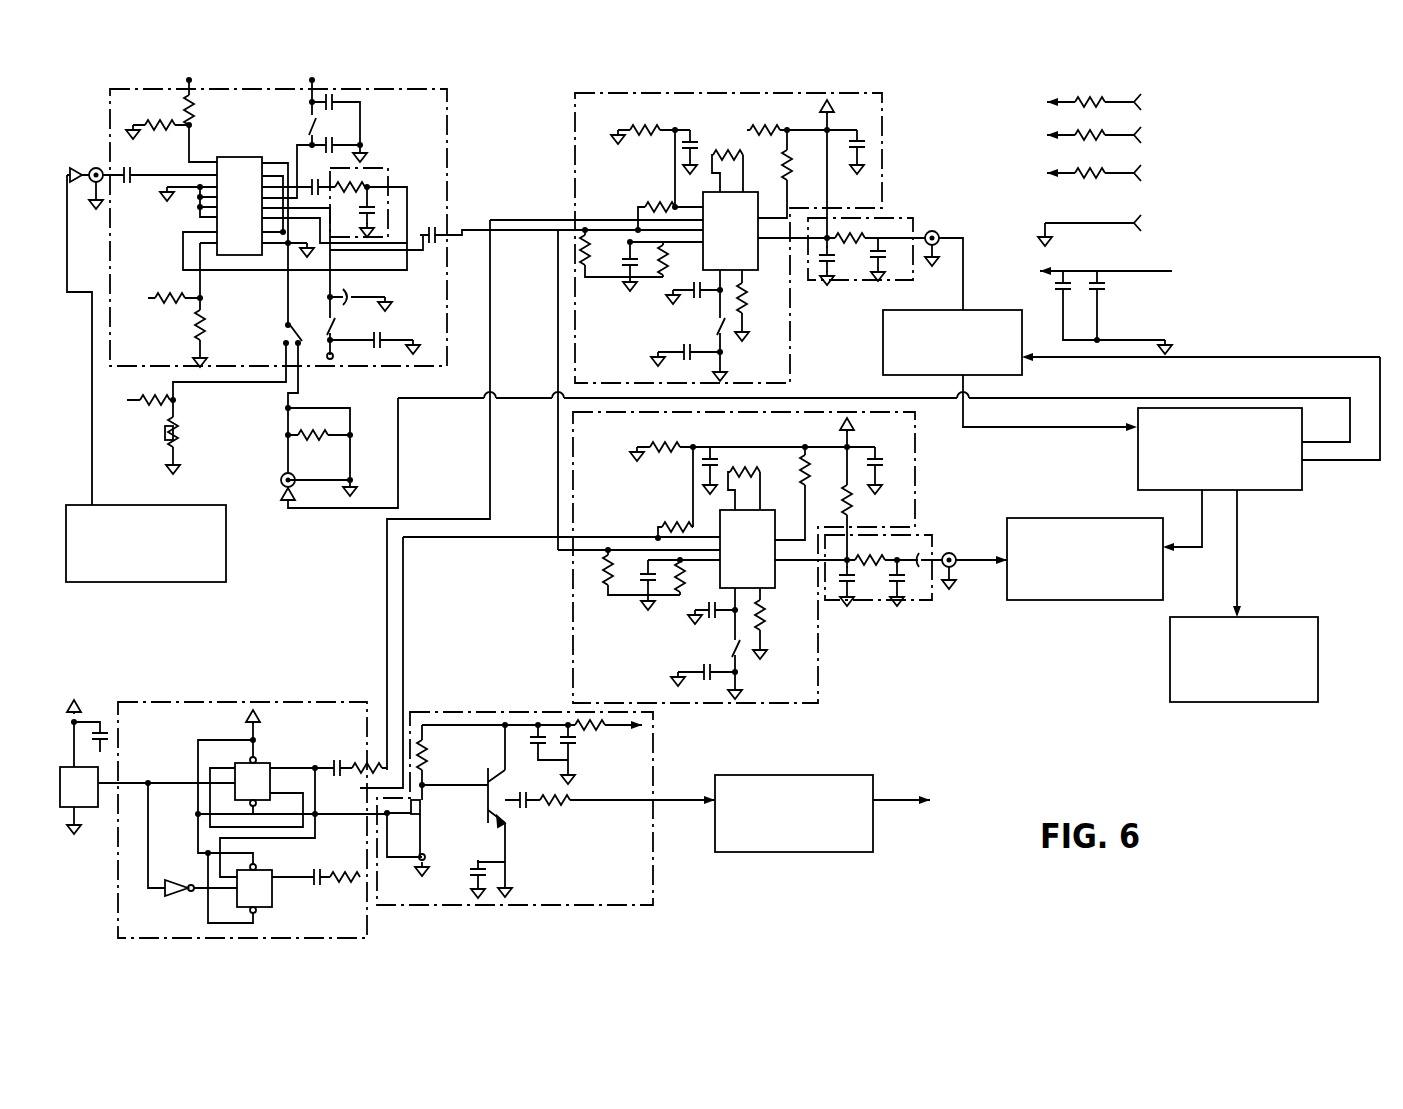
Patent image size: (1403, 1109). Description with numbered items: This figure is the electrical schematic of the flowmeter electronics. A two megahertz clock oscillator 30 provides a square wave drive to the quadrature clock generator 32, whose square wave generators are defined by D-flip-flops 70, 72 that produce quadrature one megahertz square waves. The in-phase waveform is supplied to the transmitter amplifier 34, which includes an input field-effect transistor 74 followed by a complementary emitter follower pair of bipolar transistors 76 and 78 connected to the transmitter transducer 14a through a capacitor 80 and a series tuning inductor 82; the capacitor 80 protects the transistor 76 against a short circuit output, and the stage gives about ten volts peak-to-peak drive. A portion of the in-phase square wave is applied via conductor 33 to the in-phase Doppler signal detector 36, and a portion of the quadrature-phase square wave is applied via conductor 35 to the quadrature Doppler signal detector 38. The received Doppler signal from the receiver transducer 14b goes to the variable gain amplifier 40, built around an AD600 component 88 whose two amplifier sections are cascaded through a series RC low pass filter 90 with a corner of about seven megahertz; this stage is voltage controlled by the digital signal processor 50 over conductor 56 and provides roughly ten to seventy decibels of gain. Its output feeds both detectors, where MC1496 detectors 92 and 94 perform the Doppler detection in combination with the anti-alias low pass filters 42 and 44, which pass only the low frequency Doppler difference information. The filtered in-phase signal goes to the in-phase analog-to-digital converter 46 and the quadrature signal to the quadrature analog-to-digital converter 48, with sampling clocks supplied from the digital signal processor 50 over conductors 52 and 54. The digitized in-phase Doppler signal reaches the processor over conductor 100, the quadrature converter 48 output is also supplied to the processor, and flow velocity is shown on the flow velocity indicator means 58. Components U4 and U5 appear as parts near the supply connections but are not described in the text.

The transmitter transducer 14a is at (818, 775).
The receiver transducer 14b is at (226, 547).
The clock oscillator 30 is at (87, 808).
The quadrature clock generator 32 is at (203, 706).
The conductor 33 is at (490, 447).
The transmitter amplifier 34 is at (672, 872).
The conductor 35 is at (403, 590).
The in-phase Doppler signal detector 36 is at (612, 196).
The quadrature Doppler signal detector 38 is at (573, 670).
The variable gain amplifier 40 is at (437, 129).
The in-phase low pass filter 42 is at (888, 226).
The quadrature low pass filter 44 is at (910, 545).
The in-phase analog-to-digital converter 46 is at (883, 352).
The quadrature analog-to-digital converter 48 is at (1032, 601).
The digital signal processor 50 is at (1288, 481).
The conductor 52 is at (1291, 357).
The conductor 54 is at (1200, 508).
The conductor 56 is at (1168, 398).
The flow velocity indicator means 58 is at (1310, 640).
The D-flip-flop 70 is at (263, 778).
The D-flip-flop 72 is at (266, 890).
The input field-effect transistor 74 is at (420, 812).
The bipolar transistor 76 is at (503, 770).
The bipolar transistor 78 is at (508, 826).
The capacitor 80 is at (540, 793).
The series tuning inductor 82 is at (570, 805).
The AD600 component 88 is at (238, 166).
The series RC low pass filter 90 is at (367, 170).
The MC1496 detector 92 is at (703, 253).
The MC1496 detector 94 is at (727, 572).
The conductor 100 is at (983, 432).
The capacitor U4 is at (1130, 312).
The capacitor U5 is at (1099, 303).